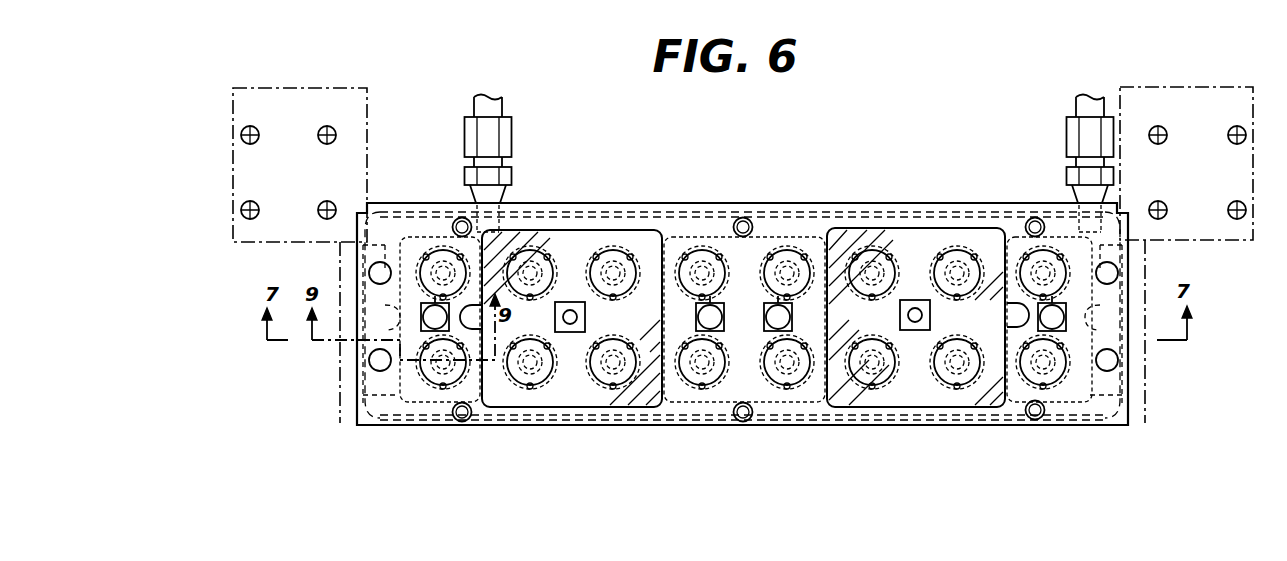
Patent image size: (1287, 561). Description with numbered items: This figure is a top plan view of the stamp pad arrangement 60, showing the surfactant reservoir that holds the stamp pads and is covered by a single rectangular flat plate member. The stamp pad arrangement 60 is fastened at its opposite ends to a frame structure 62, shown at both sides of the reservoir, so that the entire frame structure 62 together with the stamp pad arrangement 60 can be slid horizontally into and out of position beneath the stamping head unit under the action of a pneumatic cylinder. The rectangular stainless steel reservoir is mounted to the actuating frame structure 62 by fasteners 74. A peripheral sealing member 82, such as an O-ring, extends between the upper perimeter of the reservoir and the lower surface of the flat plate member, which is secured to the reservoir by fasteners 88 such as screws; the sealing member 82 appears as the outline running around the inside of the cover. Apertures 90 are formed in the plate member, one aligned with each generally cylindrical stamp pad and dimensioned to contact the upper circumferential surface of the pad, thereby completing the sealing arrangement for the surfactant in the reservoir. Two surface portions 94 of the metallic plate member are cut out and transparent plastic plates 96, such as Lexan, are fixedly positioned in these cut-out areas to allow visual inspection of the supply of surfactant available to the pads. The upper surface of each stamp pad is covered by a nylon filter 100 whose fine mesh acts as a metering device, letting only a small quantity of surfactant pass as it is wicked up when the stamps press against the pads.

The stamp pad arrangement 60 is at (726, 202).
The frame structure 62 is at (338, 375).
The fasteners 74 is at (345, 420).
The peripheral sealing member 82 is at (1085, 425).
The fasteners 88 is at (750, 222).
The apertures 90 is at (612, 232).
The surface portions 94 is at (640, 237).
The plates 96 is at (630, 408).
The filter 100 is at (525, 255).